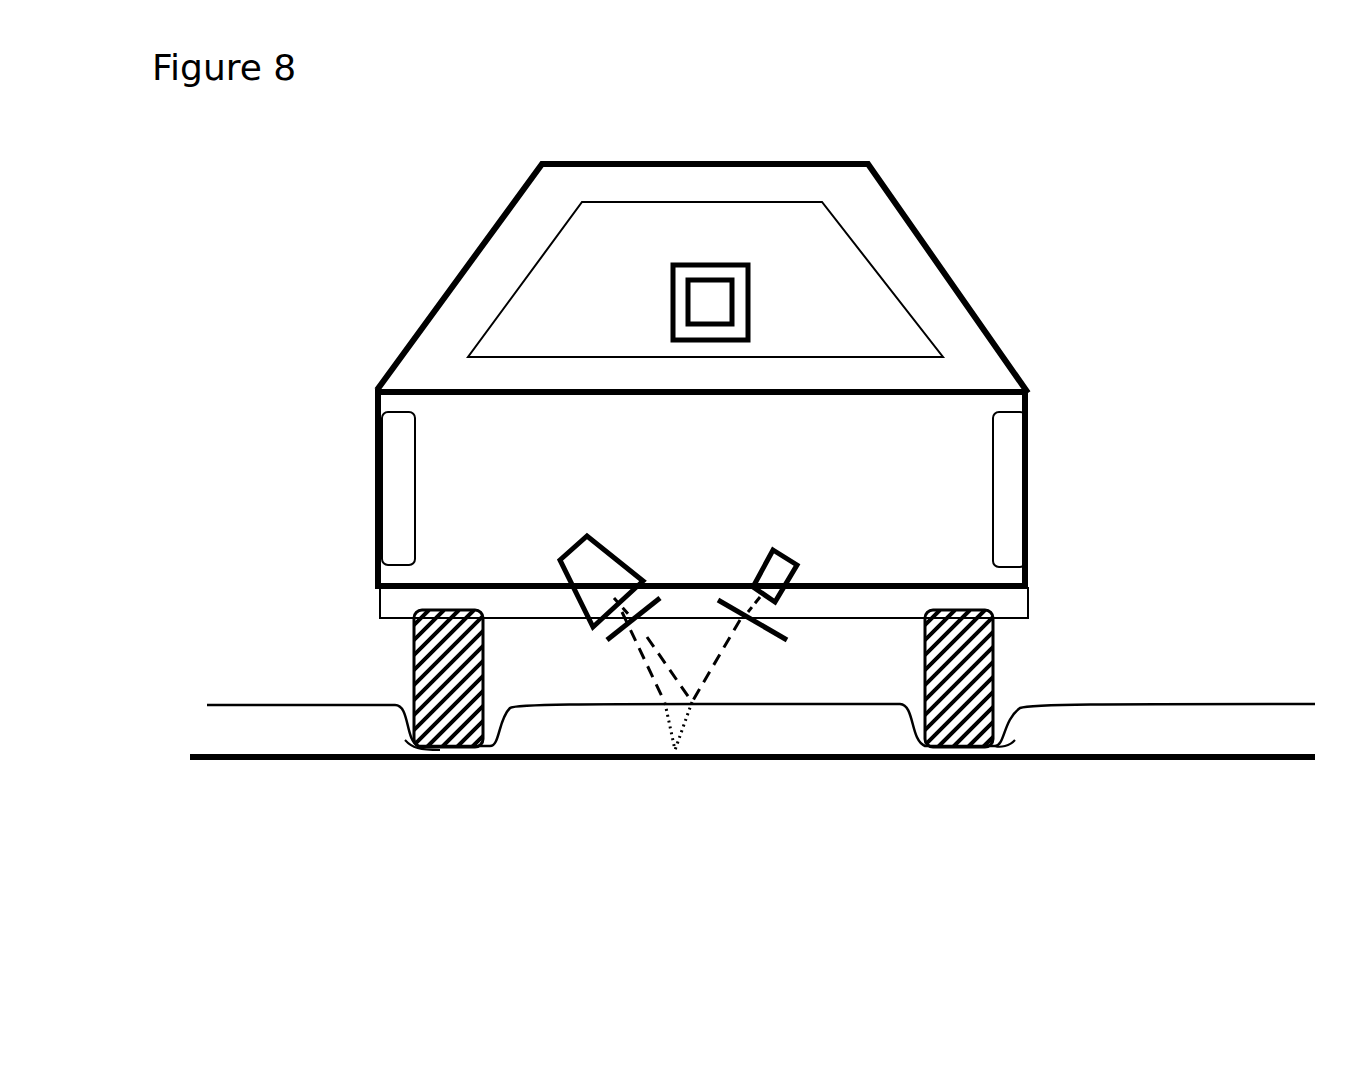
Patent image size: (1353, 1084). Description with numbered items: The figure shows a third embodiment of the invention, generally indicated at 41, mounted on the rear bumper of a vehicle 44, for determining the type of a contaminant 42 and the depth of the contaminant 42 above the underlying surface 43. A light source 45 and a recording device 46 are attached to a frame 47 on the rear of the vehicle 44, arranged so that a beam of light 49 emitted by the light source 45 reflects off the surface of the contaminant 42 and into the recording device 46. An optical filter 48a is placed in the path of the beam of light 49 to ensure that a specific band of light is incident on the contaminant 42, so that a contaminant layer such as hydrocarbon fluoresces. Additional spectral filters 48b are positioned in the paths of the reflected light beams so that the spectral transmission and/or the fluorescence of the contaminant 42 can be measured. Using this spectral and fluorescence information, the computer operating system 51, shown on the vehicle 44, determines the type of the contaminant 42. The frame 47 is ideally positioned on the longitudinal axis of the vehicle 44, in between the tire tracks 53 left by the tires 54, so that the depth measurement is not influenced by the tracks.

The detection apparatus 41 is at (598, 486).
The contaminant 42 is at (761, 727).
The surface 43 is at (752, 784).
The vehicle 44 is at (917, 267).
The light source 45 is at (773, 550).
The recording device 46 is at (565, 560).
The frame 47 is at (376, 586).
The optical filter 48a is at (788, 648).
The spectral filters 48b is at (663, 612).
The beam of light 49 is at (715, 670).
The computer operating system 51 is at (711, 265).
The tire tracks 53 is at (520, 720).
The tires 54 is at (420, 748).